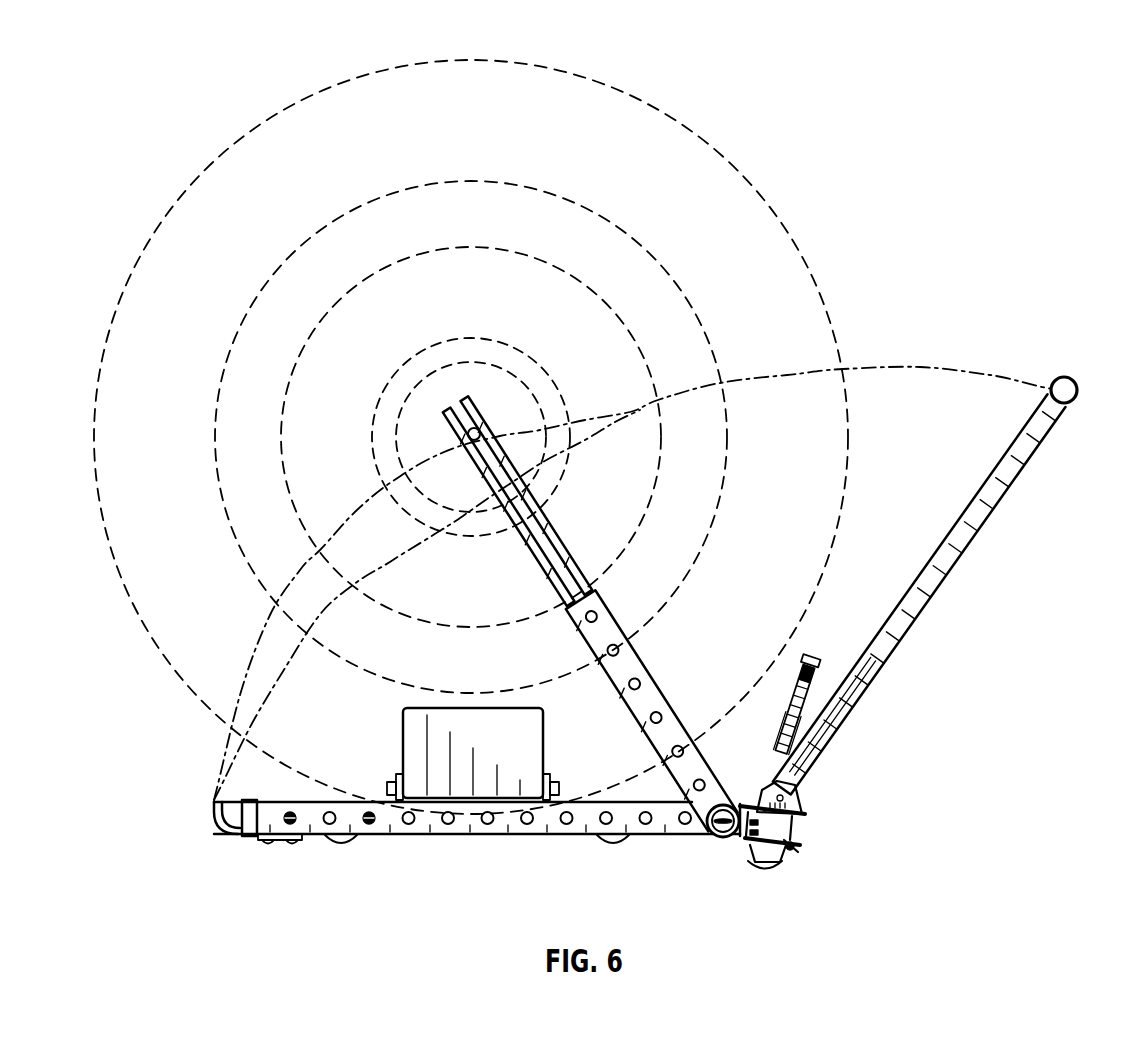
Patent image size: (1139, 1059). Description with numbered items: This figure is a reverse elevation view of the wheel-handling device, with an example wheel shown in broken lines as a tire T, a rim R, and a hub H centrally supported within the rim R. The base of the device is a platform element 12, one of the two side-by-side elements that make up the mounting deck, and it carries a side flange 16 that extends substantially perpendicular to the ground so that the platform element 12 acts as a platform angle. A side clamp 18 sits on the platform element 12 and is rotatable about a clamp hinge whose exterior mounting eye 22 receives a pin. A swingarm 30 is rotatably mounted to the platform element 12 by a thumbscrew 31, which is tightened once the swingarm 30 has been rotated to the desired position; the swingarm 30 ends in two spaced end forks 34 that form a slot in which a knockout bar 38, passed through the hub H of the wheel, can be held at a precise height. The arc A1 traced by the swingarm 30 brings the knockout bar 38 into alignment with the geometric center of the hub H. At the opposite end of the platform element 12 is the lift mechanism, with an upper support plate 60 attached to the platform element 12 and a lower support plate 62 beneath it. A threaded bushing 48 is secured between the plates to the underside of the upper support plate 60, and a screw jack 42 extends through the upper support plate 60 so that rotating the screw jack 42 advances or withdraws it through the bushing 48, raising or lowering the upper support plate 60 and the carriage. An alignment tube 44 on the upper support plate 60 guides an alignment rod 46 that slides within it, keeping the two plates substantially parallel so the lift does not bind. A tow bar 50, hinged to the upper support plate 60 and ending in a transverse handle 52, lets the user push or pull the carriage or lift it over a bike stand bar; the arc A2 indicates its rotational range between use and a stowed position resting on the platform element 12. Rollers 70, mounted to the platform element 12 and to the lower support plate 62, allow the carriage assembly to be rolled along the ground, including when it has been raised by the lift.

The platform element 12 is at (267, 800).
The side flange 16 is at (320, 830).
The side clamp 18 is at (498, 743).
The exterior mounting eye 22 is at (392, 785).
The swingarm 30 is at (634, 660).
The thumbscrew 31 is at (727, 838).
The end fork 34 is at (462, 396).
The knockout bar 38 is at (480, 430).
The screw jack 42 is at (818, 650).
The alignment tube 44 is at (784, 728).
The alignment rod 46 is at (807, 692).
The threaded bushing 48 is at (770, 830).
The tow bar 50 is at (948, 570).
The transverse handle 52 is at (1060, 379).
The upper support plate 60 is at (800, 812).
The lower support plate 62 is at (797, 840).
The roller 70 is at (330, 840).
The tire T is at (652, 97).
The rim R is at (612, 213).
The hub H is at (524, 346).
The arc A1 is at (268, 610).
The arc A2 is at (395, 573).